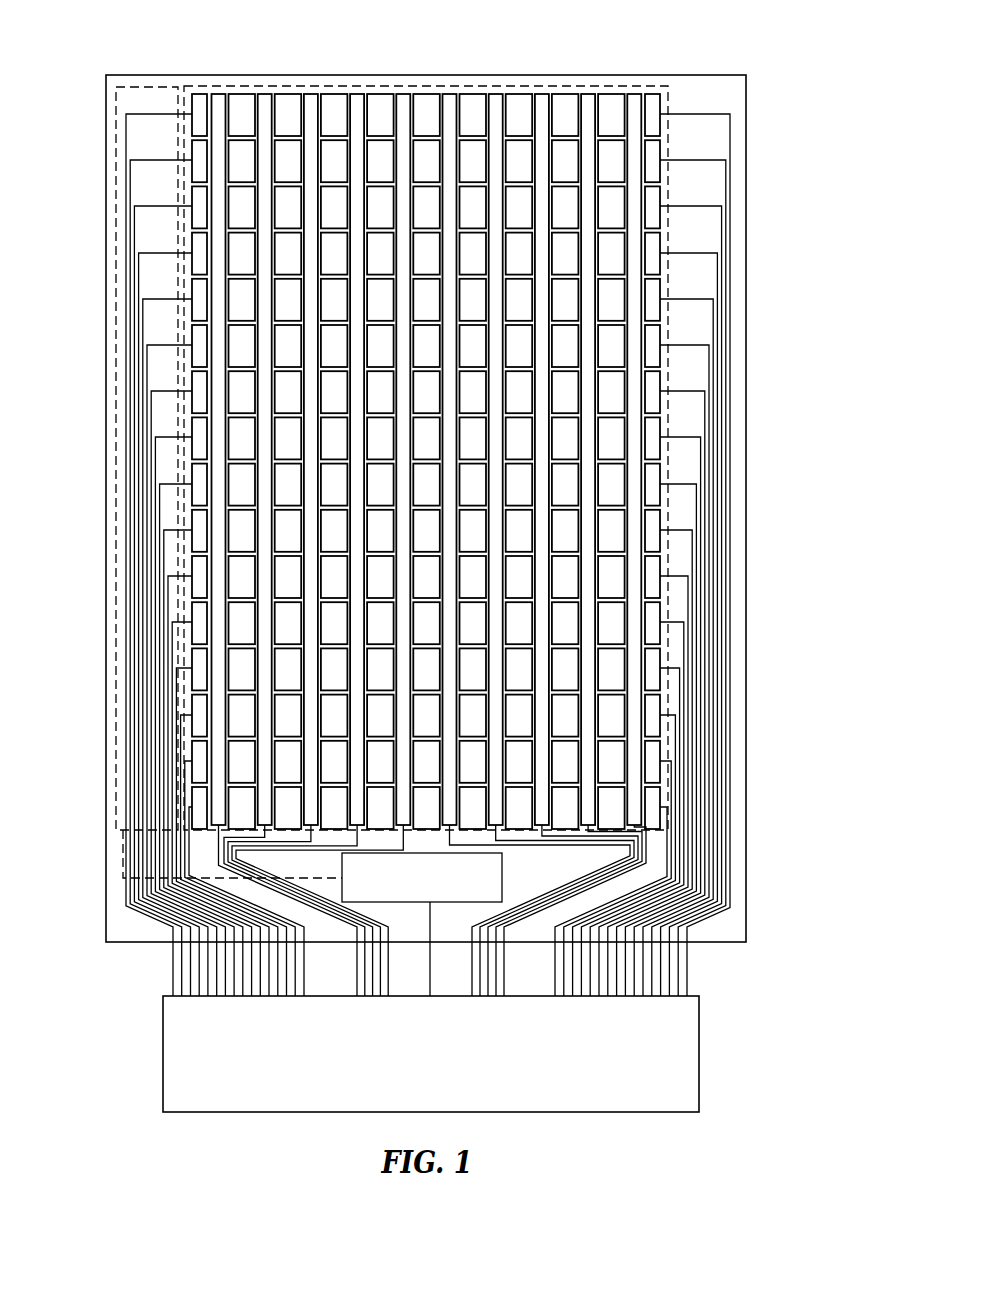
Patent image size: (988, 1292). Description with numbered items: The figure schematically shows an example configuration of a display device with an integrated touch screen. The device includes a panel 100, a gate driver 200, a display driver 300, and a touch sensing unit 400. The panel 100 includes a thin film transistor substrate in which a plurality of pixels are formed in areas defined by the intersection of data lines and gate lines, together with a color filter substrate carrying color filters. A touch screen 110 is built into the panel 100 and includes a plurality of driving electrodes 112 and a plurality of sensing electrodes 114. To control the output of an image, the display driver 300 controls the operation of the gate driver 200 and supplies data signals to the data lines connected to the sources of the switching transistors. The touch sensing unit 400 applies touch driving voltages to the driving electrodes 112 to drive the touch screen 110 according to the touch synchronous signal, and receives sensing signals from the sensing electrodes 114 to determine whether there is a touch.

The panel 100 is at (747, 268).
The touch screen 110 is at (675, 138).
The driving electrodes 112 is at (198, 98).
The sensing electrodes 114 is at (265, 100).
The gate driver 200 is at (115, 153).
The display driver 300 is at (503, 876).
The touch sensing unit 400 is at (700, 1066).